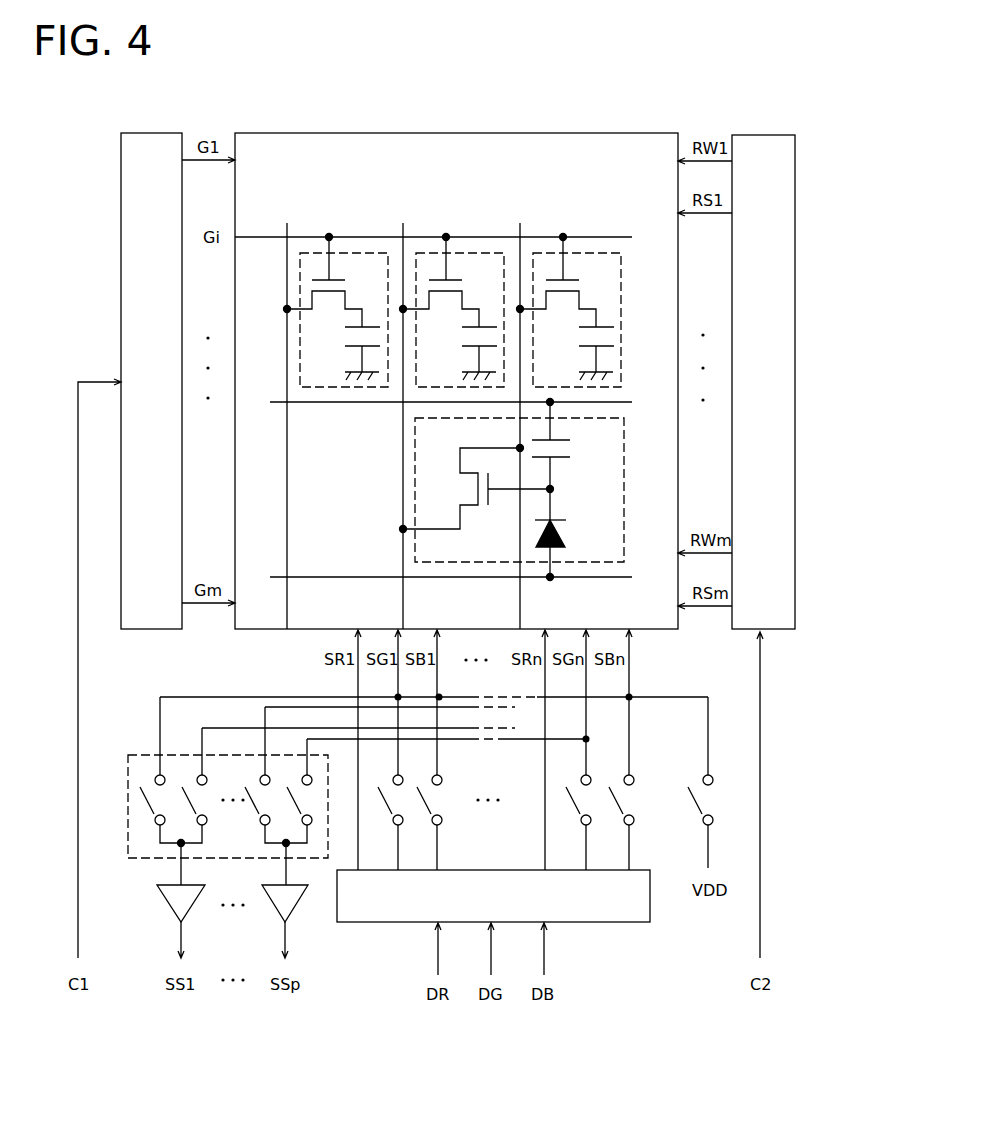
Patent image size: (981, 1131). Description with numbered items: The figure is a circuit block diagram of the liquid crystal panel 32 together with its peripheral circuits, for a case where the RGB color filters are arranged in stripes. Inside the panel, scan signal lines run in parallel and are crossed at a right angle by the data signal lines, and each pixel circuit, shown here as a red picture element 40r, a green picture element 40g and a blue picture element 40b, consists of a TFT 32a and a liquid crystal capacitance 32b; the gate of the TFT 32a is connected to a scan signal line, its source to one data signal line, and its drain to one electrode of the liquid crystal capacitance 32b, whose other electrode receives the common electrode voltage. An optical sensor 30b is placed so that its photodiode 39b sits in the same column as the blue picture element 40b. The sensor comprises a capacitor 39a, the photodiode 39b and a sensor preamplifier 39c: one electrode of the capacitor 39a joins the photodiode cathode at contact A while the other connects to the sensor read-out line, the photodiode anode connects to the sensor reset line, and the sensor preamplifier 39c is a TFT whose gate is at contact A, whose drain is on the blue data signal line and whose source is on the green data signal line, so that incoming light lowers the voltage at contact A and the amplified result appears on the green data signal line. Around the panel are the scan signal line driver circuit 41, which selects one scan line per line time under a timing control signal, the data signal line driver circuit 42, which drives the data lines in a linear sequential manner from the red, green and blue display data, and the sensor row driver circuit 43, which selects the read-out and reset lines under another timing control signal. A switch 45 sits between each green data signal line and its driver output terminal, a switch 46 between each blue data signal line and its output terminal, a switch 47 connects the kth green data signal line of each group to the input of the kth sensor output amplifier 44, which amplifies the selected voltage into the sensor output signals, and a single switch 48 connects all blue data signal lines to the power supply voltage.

The scan signal line driver circuit 41 is at (150, 133).
The liquid crystal panel 32 is at (520, 133).
The sensor row driver circuit 43 is at (762, 135).
The red picture element 40r is at (343, 252).
The green picture element 40g is at (460, 252).
The blue picture element 40b is at (580, 252).
The TFT 32a is at (346, 298).
The liquid crystal capacitance 32b is at (341, 337).
The optical sensor 30b is at (592, 566).
The capacitor 39a is at (572, 449).
The photodiode 39b is at (567, 530).
The sensor preamplifier 39c is at (480, 506).
The switch 47 is at (146, 755).
The switch 45 is at (388, 806).
The switch 46 is at (427, 806).
The switch 48 is at (696, 806).
The sensor output amplifier 44 is at (160, 908).
The data signal line driver circuit 42 is at (366, 923).